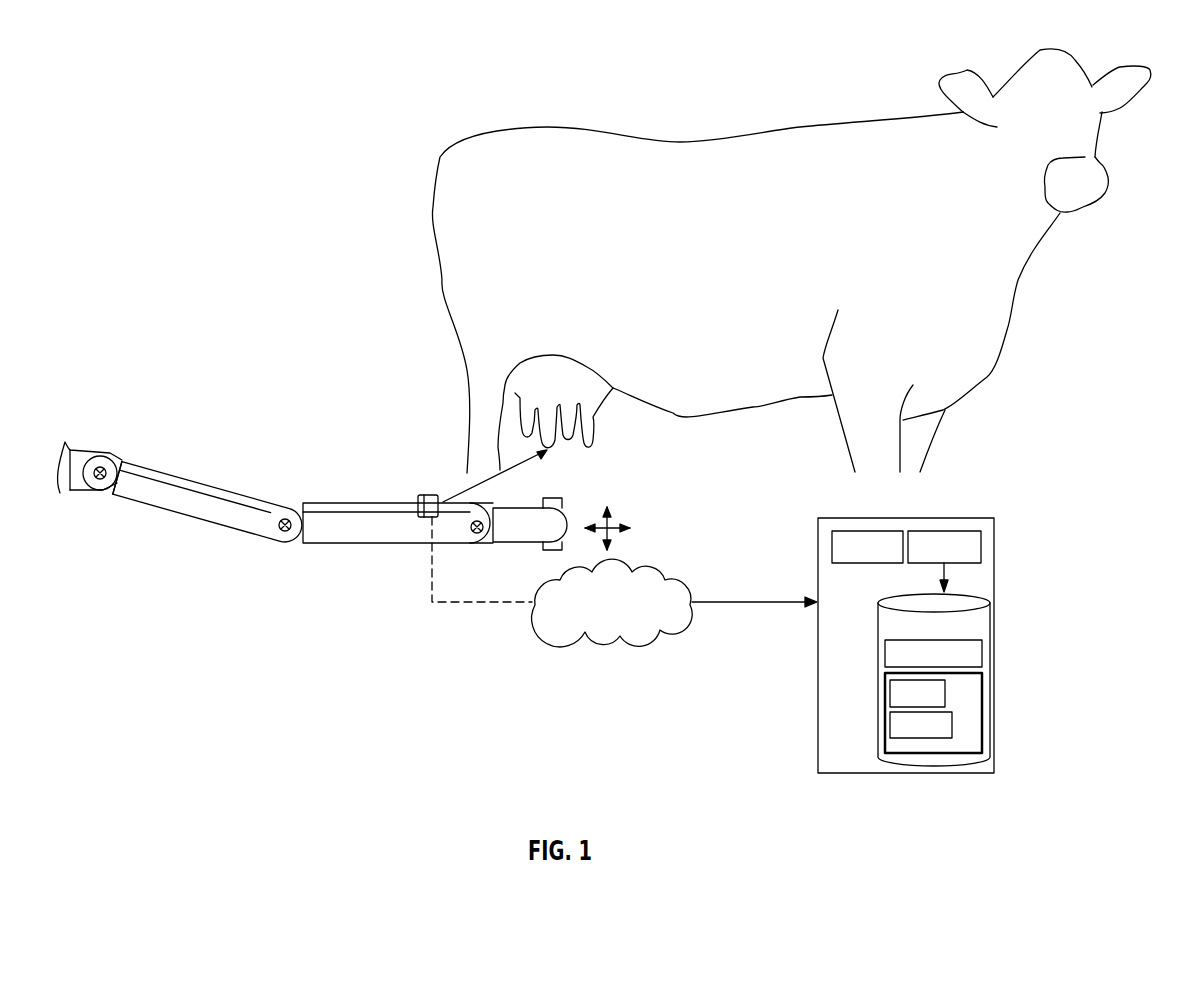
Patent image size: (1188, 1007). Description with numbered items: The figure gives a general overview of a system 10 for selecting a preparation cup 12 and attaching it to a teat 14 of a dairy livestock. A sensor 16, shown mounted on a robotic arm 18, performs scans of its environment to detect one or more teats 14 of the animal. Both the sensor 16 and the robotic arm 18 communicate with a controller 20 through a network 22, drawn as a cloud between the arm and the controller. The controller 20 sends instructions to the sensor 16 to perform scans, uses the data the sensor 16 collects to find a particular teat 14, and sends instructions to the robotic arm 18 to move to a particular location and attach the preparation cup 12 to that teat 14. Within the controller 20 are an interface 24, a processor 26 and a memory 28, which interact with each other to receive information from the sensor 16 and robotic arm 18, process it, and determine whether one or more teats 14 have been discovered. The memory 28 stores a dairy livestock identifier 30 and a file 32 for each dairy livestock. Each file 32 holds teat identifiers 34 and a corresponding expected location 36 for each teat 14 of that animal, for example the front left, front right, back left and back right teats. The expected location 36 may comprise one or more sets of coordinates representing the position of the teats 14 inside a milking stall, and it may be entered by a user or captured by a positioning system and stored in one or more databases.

The system 10 is at (198, 124).
The preparation cup 12 is at (550, 550).
The teat 14 is at (593, 443).
The sensor 16 is at (425, 487).
The robotic arm 18 is at (350, 543).
The controller 20 is at (977, 520).
The network 22 is at (665, 582).
The interface 24 is at (842, 530).
The processor 26 is at (918, 530).
The memory 28 is at (980, 612).
The dairy livestock identifier 30 is at (982, 652).
The file 32 is at (975, 713).
The teat identifier 34 is at (892, 685).
The expected location 36 is at (892, 715).